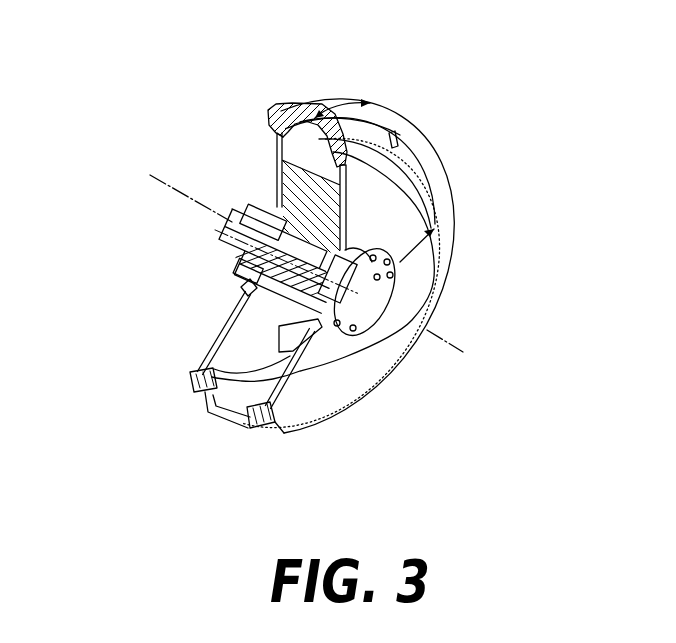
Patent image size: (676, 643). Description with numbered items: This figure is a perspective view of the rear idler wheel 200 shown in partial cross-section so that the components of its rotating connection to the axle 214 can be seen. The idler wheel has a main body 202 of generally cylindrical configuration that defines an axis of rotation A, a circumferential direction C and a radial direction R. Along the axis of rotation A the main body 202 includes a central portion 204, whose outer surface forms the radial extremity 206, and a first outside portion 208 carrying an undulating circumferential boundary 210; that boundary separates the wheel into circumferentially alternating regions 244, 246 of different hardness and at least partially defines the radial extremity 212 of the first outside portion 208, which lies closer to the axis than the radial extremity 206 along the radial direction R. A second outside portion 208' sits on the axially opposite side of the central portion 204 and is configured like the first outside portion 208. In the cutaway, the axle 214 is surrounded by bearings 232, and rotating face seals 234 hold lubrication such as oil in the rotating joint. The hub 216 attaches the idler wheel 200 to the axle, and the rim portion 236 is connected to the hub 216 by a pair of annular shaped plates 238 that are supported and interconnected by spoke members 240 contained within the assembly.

The rear idler wheel 200 is at (424, 117).
The main body 202 is at (360, 171).
The central portion 204 is at (212, 417).
The radial extremity of the central portion 206 is at (279, 427).
The first outside portion 208 is at (369, 282).
The second outside portion 208' is at (183, 388).
The undulating circumferential boundary 210 is at (425, 157).
The radial extremity of the first outside portion 212 is at (303, 100).
The axle 214 is at (402, 305).
The hub 216 is at (393, 288).
The bearings 232 is at (267, 203).
The rotating face seals 234 is at (257, 265).
The rim portion 236 is at (195, 386).
The annular shaped plates 238 is at (238, 354).
The spoke members 240 is at (286, 172).
The alternating region 244 is at (402, 152).
The alternating region 246 is at (392, 138).
The circumferential direction C is at (335, 104).
The radial direction R is at (403, 254).
The axis of rotation A is at (470, 352).